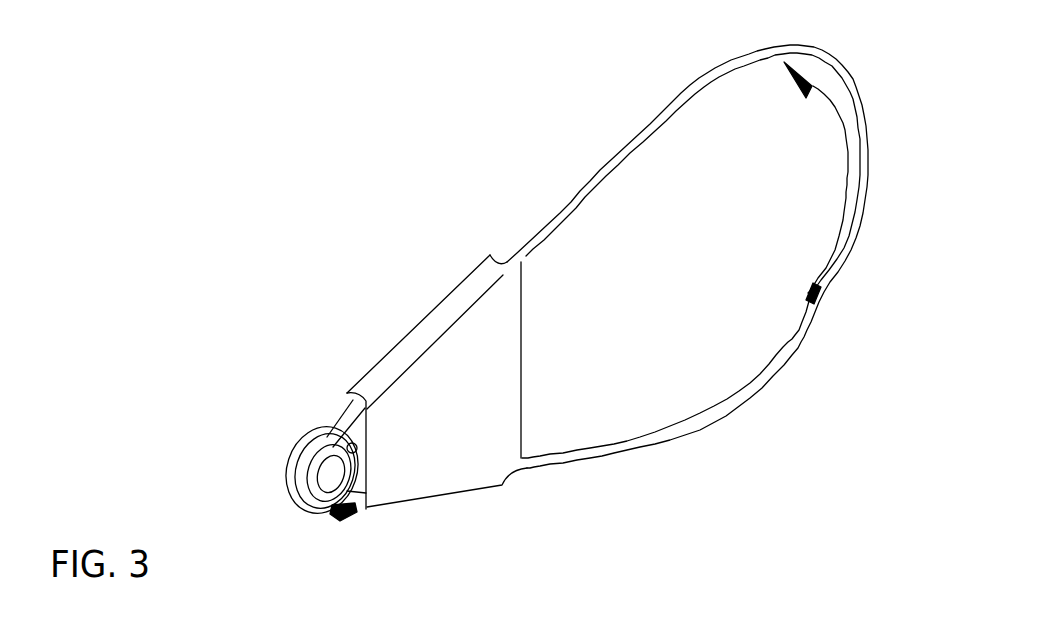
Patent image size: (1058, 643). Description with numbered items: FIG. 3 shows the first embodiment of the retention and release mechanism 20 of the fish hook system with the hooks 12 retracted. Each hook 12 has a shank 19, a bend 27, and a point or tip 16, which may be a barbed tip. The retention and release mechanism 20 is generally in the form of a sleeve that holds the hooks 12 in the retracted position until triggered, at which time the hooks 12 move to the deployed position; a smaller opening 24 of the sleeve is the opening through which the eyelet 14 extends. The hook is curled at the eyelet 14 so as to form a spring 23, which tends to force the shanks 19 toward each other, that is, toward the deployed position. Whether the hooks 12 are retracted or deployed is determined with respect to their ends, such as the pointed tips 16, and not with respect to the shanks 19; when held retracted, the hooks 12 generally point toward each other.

The hook 12 is at (580, 195).
The eyelet 14 is at (327, 440).
The hook tip 16 is at (805, 80).
The shank 19 is at (526, 262).
The retention and release mechanism 20 is at (394, 357).
The spring 23 is at (290, 480).
The smaller opening 24 is at (341, 517).
The bend 27 is at (842, 77).